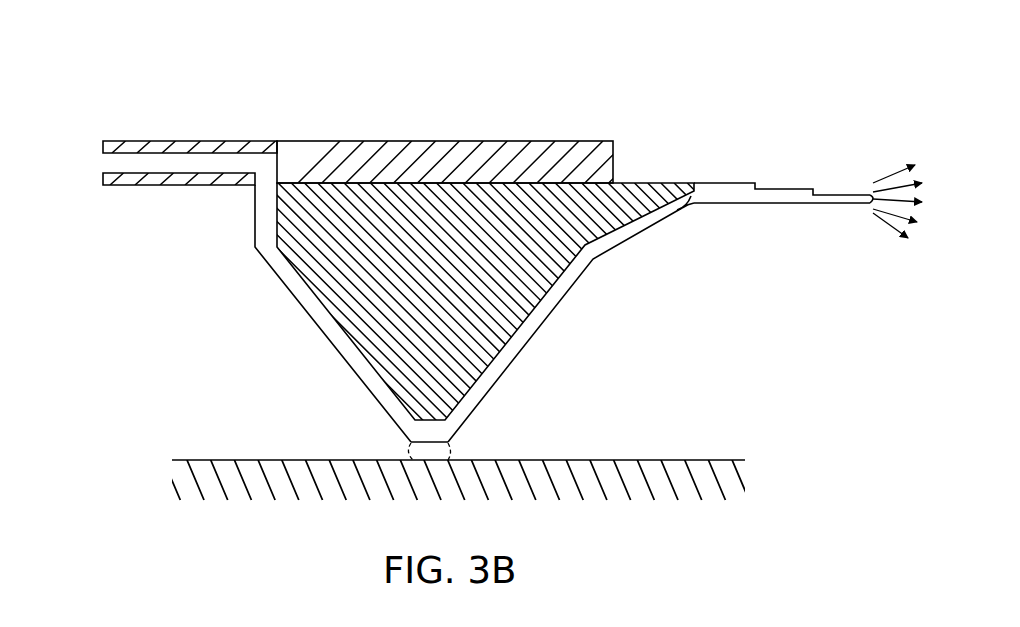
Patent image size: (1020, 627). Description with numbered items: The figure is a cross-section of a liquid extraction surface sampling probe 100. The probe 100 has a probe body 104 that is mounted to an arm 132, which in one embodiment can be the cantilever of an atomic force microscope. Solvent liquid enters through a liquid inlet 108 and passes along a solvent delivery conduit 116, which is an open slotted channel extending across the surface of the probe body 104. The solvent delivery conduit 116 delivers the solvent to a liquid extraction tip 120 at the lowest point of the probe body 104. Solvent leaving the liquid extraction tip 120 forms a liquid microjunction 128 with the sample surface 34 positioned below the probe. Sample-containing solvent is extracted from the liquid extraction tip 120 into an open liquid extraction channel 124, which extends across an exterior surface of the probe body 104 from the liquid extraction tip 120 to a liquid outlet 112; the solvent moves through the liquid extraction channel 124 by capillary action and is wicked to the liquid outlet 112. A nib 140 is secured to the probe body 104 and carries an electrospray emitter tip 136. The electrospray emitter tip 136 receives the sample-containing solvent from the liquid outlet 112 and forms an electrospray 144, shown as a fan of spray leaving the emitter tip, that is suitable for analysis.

The liquid extraction surface sampling probe 100 is at (450, 110).
The liquid inlet 108 is at (103, 162).
The arm 132 is at (565, 141).
The probe body 104 is at (322, 303).
The solvent delivery conduit 116 is at (292, 280).
The liquid extraction tip 120 is at (409, 443).
The liquid extraction channel 124 is at (557, 292).
The liquid outlet 112 is at (677, 210).
The nib 140 is at (785, 183).
The electrospray emitter tip 136 is at (871, 204).
The electrospray 144 is at (893, 174).
The liquid microjunction 128 is at (451, 456).
The sample surface 34 is at (728, 460).